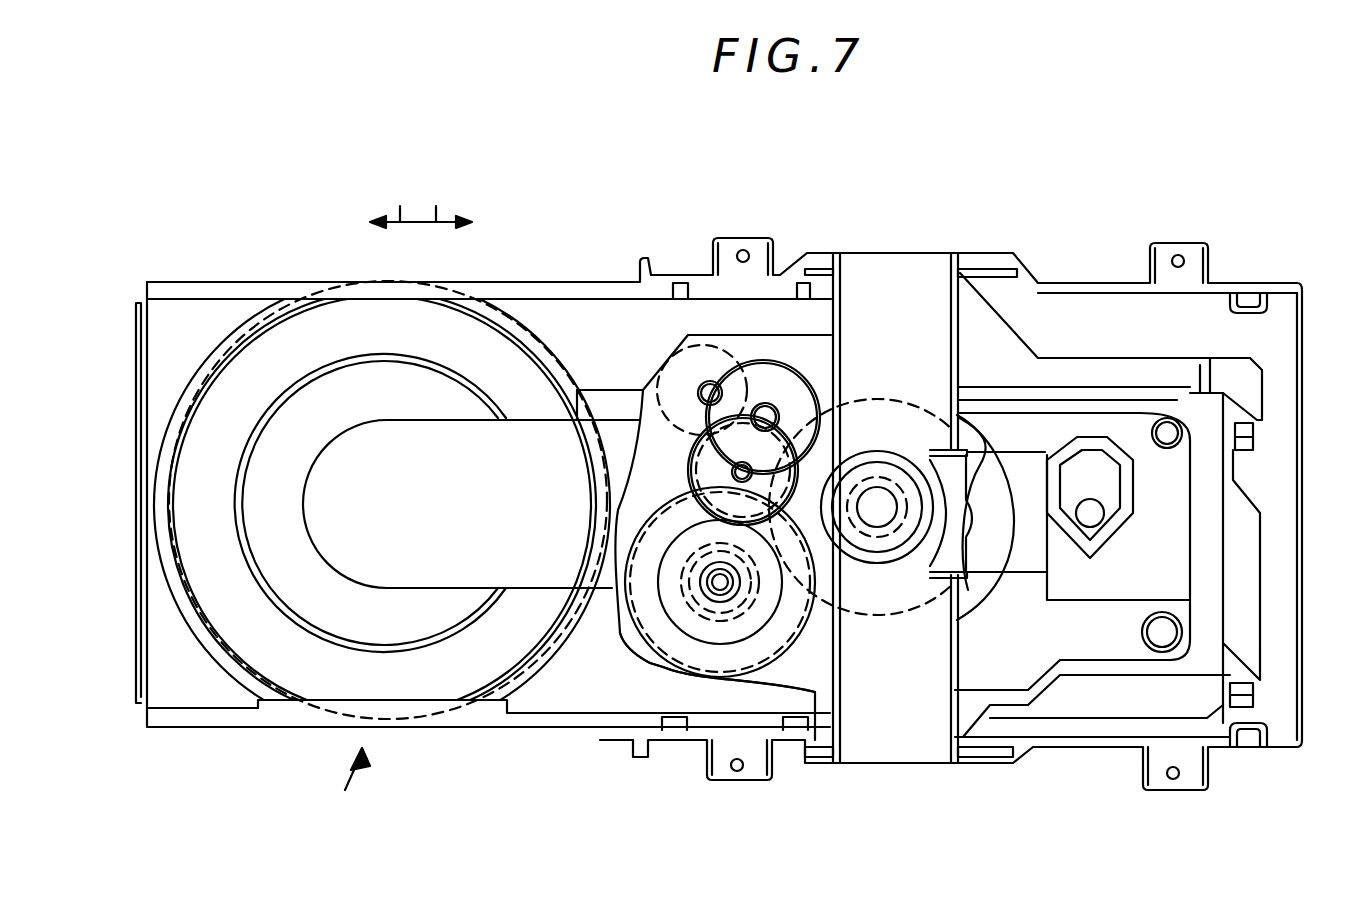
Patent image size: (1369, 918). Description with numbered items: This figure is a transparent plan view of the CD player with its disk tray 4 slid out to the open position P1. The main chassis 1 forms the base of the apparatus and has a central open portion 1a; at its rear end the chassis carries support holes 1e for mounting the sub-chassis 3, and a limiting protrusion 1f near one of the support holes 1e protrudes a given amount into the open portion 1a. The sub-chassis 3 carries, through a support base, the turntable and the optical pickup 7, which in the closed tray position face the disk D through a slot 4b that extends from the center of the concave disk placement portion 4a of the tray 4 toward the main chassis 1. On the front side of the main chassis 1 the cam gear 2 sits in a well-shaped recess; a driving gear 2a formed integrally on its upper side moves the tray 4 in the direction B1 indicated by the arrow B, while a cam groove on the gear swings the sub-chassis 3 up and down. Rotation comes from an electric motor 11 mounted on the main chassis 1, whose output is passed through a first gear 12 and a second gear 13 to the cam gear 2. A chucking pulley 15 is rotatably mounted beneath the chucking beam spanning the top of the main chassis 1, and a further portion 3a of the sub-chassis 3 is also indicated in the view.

The main chassis 1 is at (963, 256).
The open portion 1a is at (1250, 387).
The support holes 1e is at (1250, 446).
The limiting protrusion 1f is at (1212, 380).
The cam gear 2 is at (648, 565).
The driving gear 2a is at (663, 652).
The sub-chassis 3 is at (1125, 668).
The engagement claw of sub-chassis 3a is at (1252, 431).
The tray 4 is at (183, 310).
The disk placement portion 4a is at (527, 345).
The slot 4b is at (442, 427).
The optical pickup 7 is at (1090, 480).
The electric motor 11 is at (680, 382).
The first gear 12 is at (708, 430).
The second gear 13 is at (690, 490).
The chucking pulley 15 is at (982, 462).
The disk D is at (537, 617).
The open position P1 is at (339, 785).
The arrow B is at (453, 193).
The direction B1 is at (393, 193).